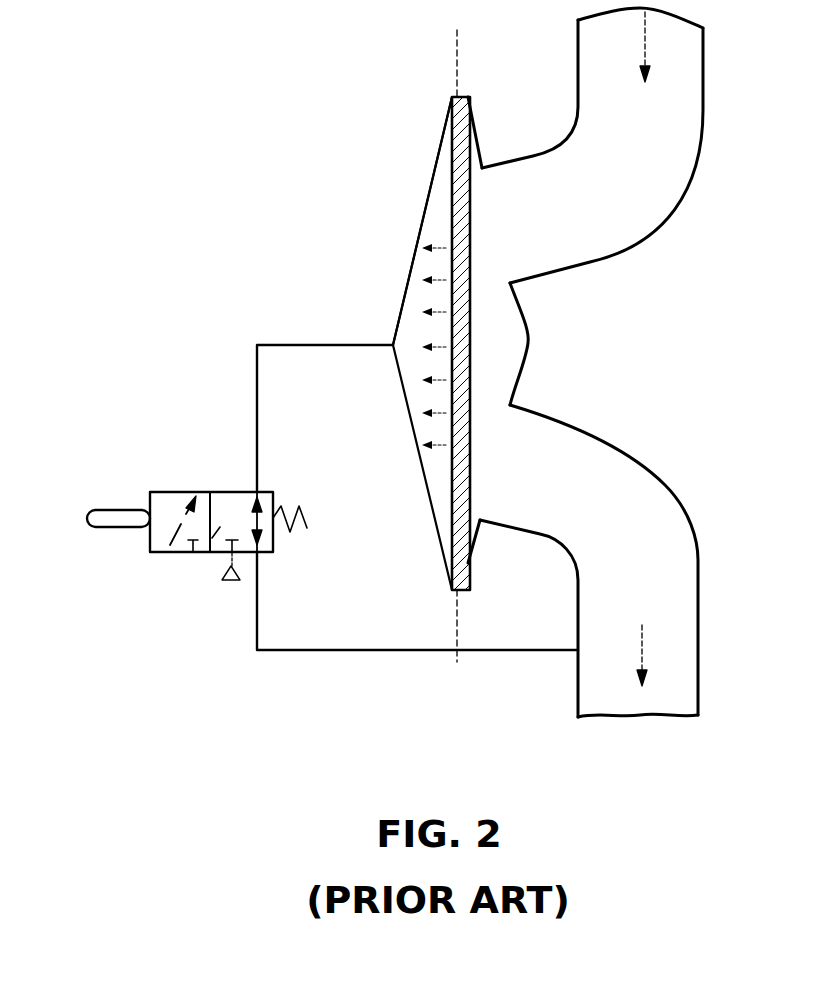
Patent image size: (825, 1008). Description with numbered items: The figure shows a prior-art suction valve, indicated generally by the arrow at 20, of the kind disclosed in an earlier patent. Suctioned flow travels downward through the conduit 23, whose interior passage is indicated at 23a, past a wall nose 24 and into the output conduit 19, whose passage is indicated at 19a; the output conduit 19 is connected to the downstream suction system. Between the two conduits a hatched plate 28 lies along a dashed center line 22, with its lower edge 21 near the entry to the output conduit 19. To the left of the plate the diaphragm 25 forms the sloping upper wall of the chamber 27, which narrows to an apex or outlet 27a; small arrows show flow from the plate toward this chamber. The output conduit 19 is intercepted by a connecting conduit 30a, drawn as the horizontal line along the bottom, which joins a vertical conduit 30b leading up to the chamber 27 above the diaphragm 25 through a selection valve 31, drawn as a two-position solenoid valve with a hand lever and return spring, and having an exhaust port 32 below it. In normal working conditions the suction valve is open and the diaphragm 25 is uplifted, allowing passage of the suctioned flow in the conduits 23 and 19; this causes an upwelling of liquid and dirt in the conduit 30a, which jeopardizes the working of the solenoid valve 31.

The output conduit 19 is at (680, 652).
The lower duct passage 19a is at (495, 472).
The flow diverter apparatus 20 is at (352, 111).
The lower edge of plate 21 is at (472, 560).
The center line 22 is at (462, 50).
The conduit 23 is at (676, 100).
The upper duct passage 23a is at (490, 233).
The duct wall nose 24 is at (523, 376).
The diaphragm 25 is at (460, 195).
The chamber 27 is at (415, 300).
The funnel outlet 27a is at (393, 352).
The perforated plate 28 is at (446, 155).
The connecting conduit 30a is at (370, 652).
The upper conduit 30b is at (255, 407).
The selection valve 31 is at (203, 552).
The exhaust port 32 is at (228, 585).